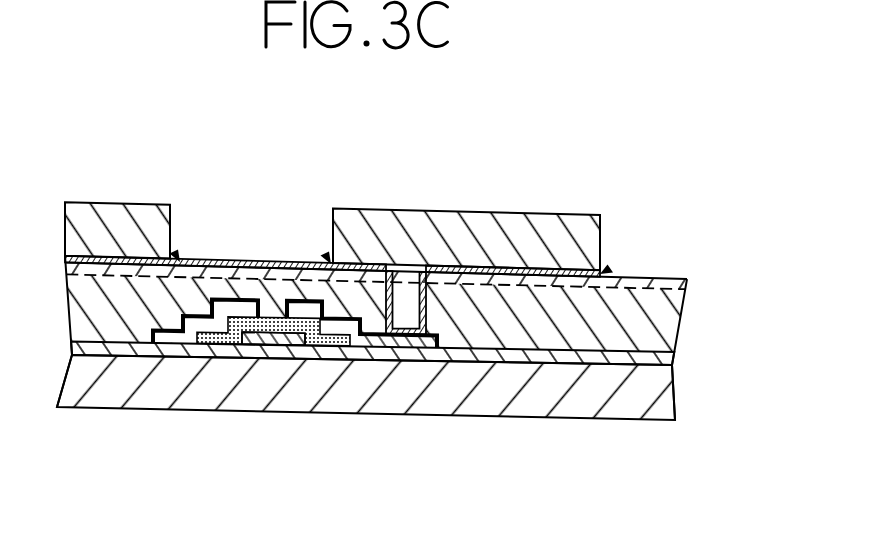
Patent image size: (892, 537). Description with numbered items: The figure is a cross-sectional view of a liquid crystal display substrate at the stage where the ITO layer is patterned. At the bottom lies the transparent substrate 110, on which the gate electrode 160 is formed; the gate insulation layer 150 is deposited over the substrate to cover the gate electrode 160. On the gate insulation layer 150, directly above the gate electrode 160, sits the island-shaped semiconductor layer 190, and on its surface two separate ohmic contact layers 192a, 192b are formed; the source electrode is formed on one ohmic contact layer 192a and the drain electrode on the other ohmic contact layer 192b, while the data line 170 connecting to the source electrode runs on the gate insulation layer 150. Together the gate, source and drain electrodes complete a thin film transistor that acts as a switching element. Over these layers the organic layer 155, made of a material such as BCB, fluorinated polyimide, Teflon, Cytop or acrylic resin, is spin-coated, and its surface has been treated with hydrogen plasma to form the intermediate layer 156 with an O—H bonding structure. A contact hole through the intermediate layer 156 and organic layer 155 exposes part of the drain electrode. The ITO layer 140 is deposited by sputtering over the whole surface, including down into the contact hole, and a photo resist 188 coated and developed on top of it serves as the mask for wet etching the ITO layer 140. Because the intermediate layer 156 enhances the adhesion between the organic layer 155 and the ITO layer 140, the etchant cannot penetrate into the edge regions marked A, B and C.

The transparent substrate 110 is at (650, 412).
The gate insulation layer 150 is at (513, 357).
The organic layer 155 is at (597, 345).
The intermediate layer 156 is at (687, 279).
The ITO layer 140 is at (98, 220).
The photo resist 188 is at (543, 223).
The semiconductor layer 190 is at (268, 298).
The gate electrode 160 is at (283, 346).
The data line 170 is at (130, 356).
The ohmic contact layer 192a is at (192, 348).
The ohmic contact layer 192b is at (347, 340).
The region A is at (608, 269).
The region B is at (327, 257).
The region C is at (176, 255).